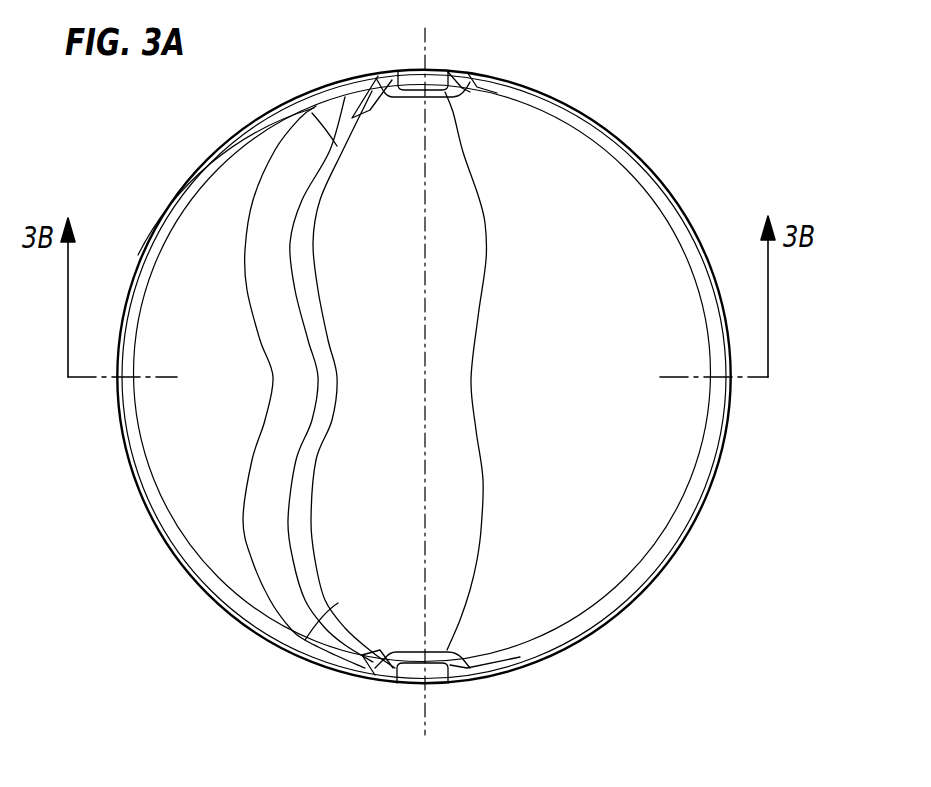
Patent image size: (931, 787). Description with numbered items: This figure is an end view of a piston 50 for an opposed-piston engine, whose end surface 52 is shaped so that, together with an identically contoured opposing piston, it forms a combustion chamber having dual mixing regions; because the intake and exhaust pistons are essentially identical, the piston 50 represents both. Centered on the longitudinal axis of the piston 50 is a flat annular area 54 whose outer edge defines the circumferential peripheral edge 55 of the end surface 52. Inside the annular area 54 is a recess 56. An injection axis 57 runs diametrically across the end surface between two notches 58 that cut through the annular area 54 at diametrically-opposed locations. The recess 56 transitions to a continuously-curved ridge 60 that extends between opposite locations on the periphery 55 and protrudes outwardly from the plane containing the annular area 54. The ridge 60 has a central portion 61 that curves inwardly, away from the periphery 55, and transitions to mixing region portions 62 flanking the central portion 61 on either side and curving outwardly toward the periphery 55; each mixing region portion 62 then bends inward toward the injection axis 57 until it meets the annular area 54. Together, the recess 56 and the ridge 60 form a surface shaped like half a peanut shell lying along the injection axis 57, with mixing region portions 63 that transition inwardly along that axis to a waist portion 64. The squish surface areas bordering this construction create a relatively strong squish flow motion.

The piston 50 is at (600, 106).
The end surface 52 is at (205, 250).
The annular area 54 is at (679, 222).
The peripheral edge 55 is at (637, 152).
The recess 56 is at (580, 438).
The injection axis 57 is at (427, 140).
The notch 58 is at (435, 78).
The ridge 60 is at (208, 458).
The central portion 61 is at (270, 398).
The mixing region portion 62 is at (278, 173).
The mixing region portion 63 is at (400, 220).
The waist portion 64 is at (412, 408).